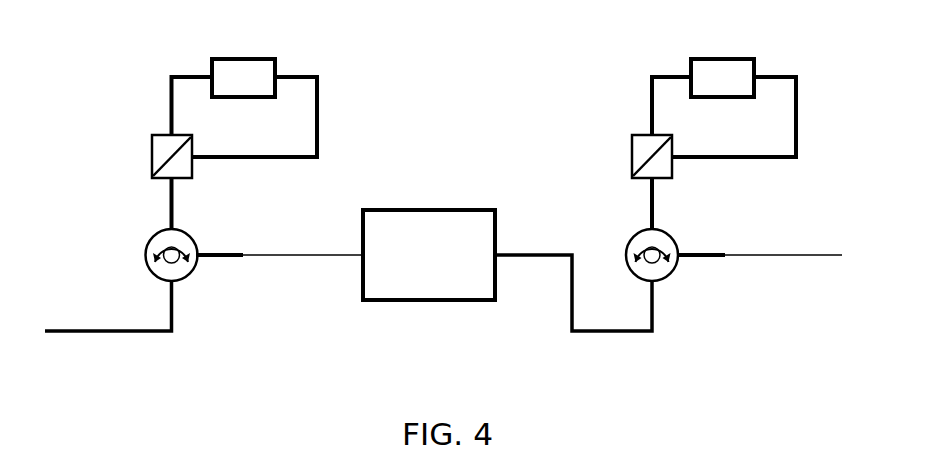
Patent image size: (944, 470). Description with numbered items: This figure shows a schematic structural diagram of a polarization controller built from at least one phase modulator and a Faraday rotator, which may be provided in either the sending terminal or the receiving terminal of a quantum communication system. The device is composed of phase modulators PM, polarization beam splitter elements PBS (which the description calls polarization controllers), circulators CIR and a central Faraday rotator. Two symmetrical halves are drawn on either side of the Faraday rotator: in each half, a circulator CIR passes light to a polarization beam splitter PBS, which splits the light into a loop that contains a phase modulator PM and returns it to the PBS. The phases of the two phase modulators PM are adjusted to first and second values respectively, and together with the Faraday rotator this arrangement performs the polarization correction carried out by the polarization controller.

The phase modulator PM is at (483, 54).
The polarization controller PBS is at (387, 156).
The circulator CIR is at (385, 255).